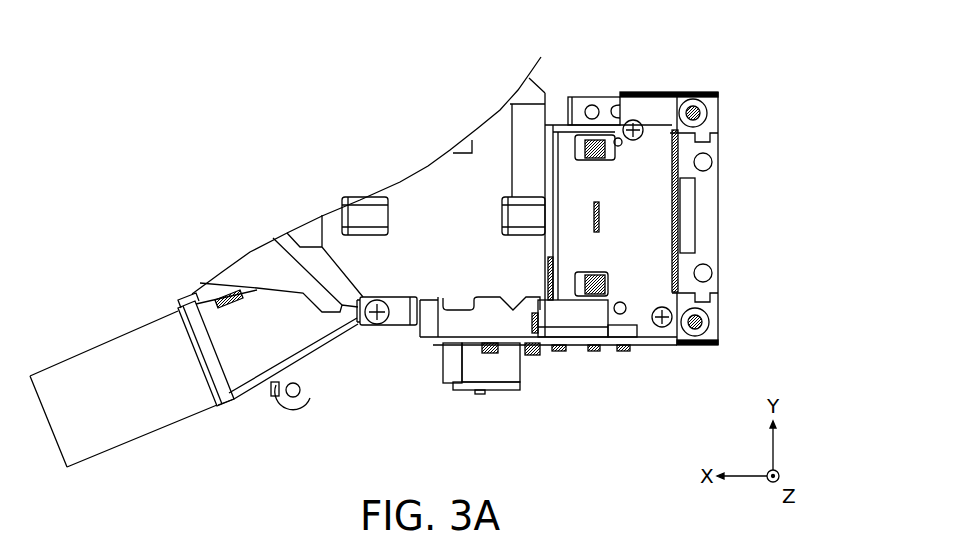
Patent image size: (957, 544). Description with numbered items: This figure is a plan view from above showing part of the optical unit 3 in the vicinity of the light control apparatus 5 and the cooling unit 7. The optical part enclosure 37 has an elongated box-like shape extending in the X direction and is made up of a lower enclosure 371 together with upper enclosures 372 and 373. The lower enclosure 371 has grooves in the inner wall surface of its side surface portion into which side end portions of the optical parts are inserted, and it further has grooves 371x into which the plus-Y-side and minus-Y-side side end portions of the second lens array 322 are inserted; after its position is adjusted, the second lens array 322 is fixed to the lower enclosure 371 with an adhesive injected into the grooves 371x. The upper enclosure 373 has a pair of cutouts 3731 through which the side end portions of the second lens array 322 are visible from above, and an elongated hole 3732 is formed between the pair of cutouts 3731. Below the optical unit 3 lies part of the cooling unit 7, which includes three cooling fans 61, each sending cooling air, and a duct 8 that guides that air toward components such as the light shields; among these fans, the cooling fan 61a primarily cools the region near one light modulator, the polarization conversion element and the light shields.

The optical unit 3 is at (686, 43).
The light control apparatus 5 is at (531, 383).
The cooling unit 7 is at (225, 452).
The duct 8 is at (250, 373).
The optical part enclosure 37 is at (512, 181).
The cooling fans 61 is at (143, 378).
The cooling fan 61a is at (127, 428).
The second lens array 322 is at (615, 155).
The lower enclosure 371 is at (591, 128).
The grooves 371x is at (646, 128).
The upper enclosure 372 is at (510, 121).
The upper enclosure 373 is at (615, 212).
The cutouts 3731 is at (570, 172).
The elongated hole 3732 is at (680, 228).